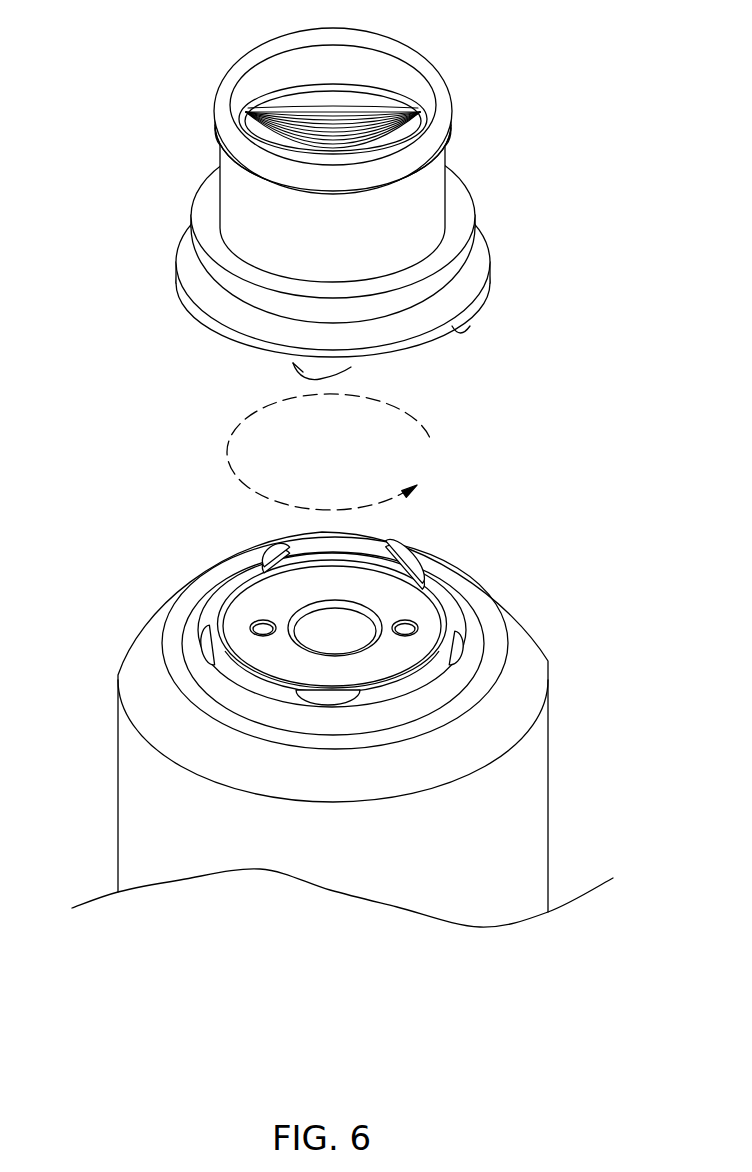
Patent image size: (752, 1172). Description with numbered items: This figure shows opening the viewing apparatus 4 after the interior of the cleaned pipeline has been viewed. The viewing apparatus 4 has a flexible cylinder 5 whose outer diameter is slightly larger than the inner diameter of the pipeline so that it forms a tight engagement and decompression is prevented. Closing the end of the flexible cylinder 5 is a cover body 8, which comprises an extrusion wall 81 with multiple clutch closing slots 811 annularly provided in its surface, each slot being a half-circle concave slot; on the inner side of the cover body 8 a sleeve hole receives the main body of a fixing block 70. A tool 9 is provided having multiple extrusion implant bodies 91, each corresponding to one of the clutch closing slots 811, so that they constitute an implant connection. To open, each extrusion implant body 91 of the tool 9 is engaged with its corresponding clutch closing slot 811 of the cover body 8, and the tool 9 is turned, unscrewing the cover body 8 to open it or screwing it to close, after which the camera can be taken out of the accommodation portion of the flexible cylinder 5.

The viewing apparatus 4 is at (332, 700).
The flexible cylinder 5 is at (526, 831).
The cover body 8 is at (340, 604).
The extrusion wall 81 is at (456, 585).
The clutch closing slot 811 is at (258, 562).
The fixing block 70 is at (255, 608).
The tool 9 is at (311, 208).
The extrusion implant body 91 is at (298, 363).